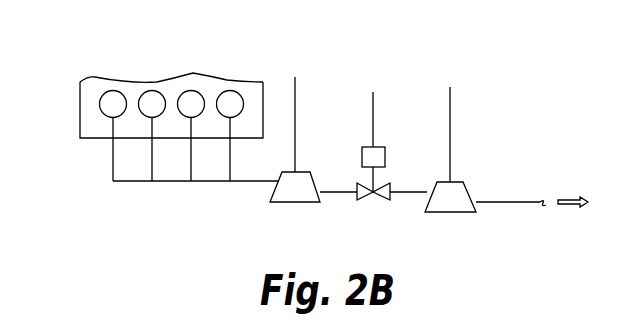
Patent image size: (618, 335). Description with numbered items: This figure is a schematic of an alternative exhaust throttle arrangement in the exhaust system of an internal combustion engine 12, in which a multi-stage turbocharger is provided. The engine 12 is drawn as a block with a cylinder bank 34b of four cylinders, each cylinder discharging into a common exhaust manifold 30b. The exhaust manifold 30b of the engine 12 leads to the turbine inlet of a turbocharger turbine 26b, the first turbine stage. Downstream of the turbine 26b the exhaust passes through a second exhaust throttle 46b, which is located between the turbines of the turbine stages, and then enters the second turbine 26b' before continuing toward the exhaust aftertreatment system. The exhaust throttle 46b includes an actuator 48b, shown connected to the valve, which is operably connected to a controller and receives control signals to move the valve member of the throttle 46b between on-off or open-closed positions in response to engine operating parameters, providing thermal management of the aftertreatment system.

The internal combustion engine 12 is at (147, 85).
The second cylinder bank 34b is at (170, 76).
The exhaust manifold 30b is at (137, 183).
The turbocharger turbine 26b is at (306, 160).
The second exhaust throttle 46b is at (371, 203).
The actuator 48b is at (386, 149).
The turbine 26b' is at (506, 171).